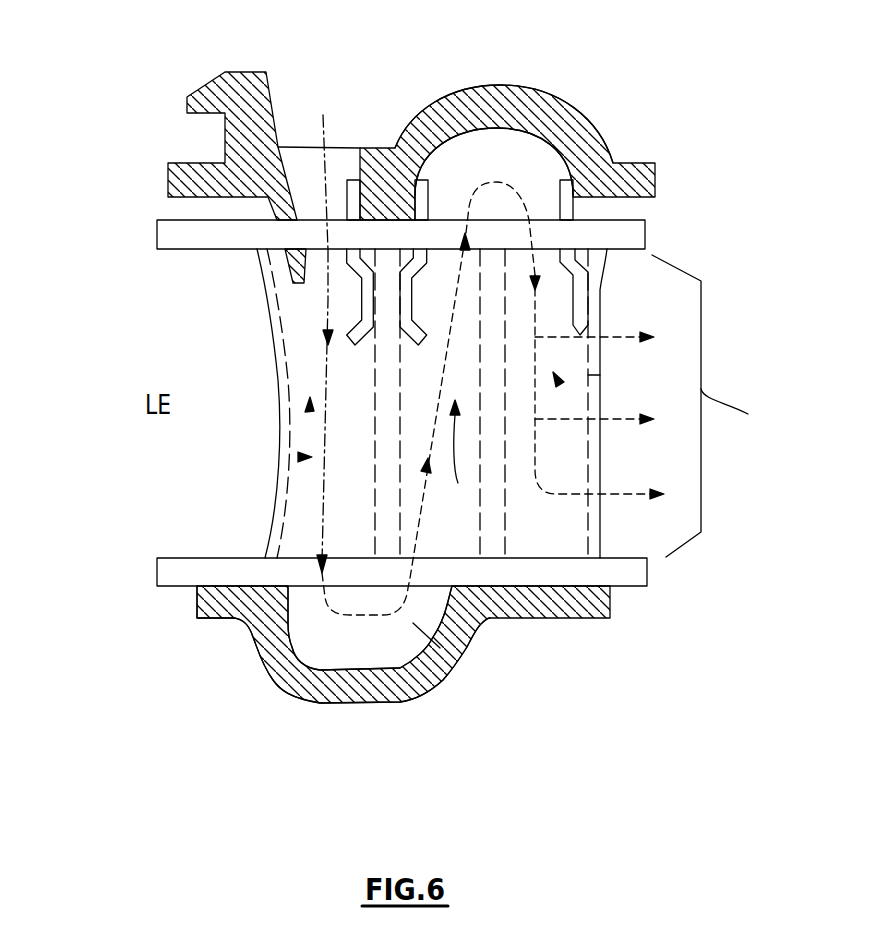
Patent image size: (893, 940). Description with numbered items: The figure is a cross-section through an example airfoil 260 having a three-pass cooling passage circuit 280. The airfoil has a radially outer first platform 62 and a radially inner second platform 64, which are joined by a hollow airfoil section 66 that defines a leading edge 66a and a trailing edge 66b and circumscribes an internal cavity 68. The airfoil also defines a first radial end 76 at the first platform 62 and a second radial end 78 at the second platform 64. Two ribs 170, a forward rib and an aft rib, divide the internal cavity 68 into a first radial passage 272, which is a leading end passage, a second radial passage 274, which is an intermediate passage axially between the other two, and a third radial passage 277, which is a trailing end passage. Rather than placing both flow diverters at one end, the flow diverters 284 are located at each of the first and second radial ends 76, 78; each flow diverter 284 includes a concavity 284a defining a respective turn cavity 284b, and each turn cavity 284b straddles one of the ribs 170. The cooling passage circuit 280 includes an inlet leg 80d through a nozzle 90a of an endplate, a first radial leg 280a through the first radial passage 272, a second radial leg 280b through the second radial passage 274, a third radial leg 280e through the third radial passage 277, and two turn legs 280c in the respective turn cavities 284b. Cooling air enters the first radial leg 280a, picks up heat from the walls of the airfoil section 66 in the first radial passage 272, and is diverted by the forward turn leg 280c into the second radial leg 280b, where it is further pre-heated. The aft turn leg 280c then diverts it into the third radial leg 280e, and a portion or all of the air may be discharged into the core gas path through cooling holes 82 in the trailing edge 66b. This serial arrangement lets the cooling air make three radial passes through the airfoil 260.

The first platform 62 is at (637, 232).
The second platform 64 is at (635, 572).
The airfoil section 66 is at (717, 406).
The leading edge 66a is at (271, 318).
The trailing edge 66b is at (600, 478).
The internal cavity 68 is at (298, 457).
The first radial end 76 is at (120, 232).
The second radial end 78 is at (120, 572).
The inlet leg 80d is at (326, 135).
The cooling holes 82 is at (588, 375).
The nozzle 90a is at (297, 168).
The ribs 170 is at (388, 357).
The airfoil 260 is at (140, 477).
The first radial passage 272 is at (307, 412).
The second radial passage 274 is at (458, 483).
The third radial passage 277 is at (560, 384).
The cooling passage circuit 280 is at (309, 514).
The first radial leg 280a is at (327, 291).
The second radial leg 280b is at (425, 490).
The turn legs 280c is at (515, 184).
The third radial leg 280e is at (535, 320).
The flow diverters 284 is at (558, 95).
The concavity 284a is at (548, 166).
The turn cavities 284b is at (545, 170).